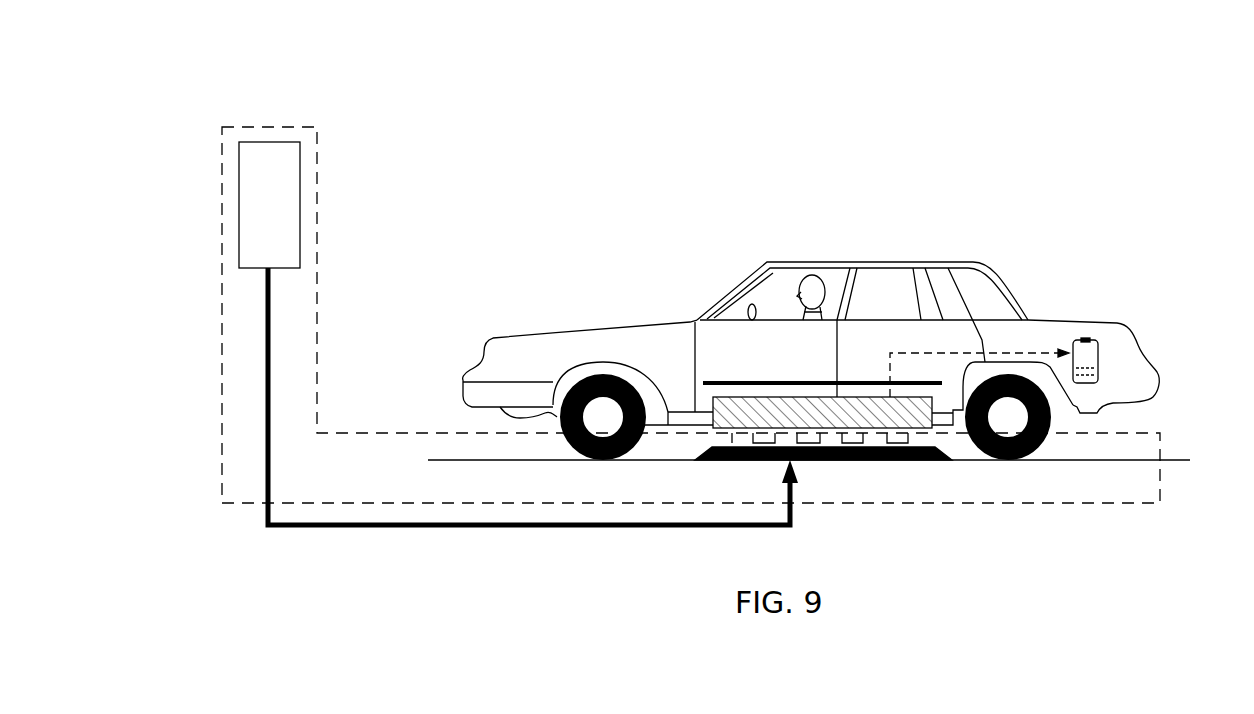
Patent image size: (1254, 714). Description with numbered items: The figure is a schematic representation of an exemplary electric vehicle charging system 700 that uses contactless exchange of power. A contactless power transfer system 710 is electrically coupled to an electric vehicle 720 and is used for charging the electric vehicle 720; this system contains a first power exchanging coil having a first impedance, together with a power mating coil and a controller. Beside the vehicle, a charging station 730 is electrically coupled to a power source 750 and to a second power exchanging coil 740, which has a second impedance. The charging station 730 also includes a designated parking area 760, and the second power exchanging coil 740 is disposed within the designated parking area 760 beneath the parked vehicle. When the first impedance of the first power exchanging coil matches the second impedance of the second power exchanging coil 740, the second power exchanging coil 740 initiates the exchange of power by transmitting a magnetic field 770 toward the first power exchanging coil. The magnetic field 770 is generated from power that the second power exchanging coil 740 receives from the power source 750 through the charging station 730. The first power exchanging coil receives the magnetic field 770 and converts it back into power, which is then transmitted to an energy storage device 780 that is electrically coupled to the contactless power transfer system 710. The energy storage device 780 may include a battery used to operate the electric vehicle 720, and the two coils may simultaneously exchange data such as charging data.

The electric vehicle charging system 700 is at (1104, 83).
The contactless power transfer system 710 is at (741, 397).
The electric vehicle 720 is at (980, 257).
The charging station 730 is at (313, 123).
The second power exchanging coil 740 is at (872, 463).
The power source 750 is at (300, 216).
The designated parking area 760 is at (1165, 456).
The magnetic field 770 is at (732, 440).
The energy storage device 780 is at (1100, 356).